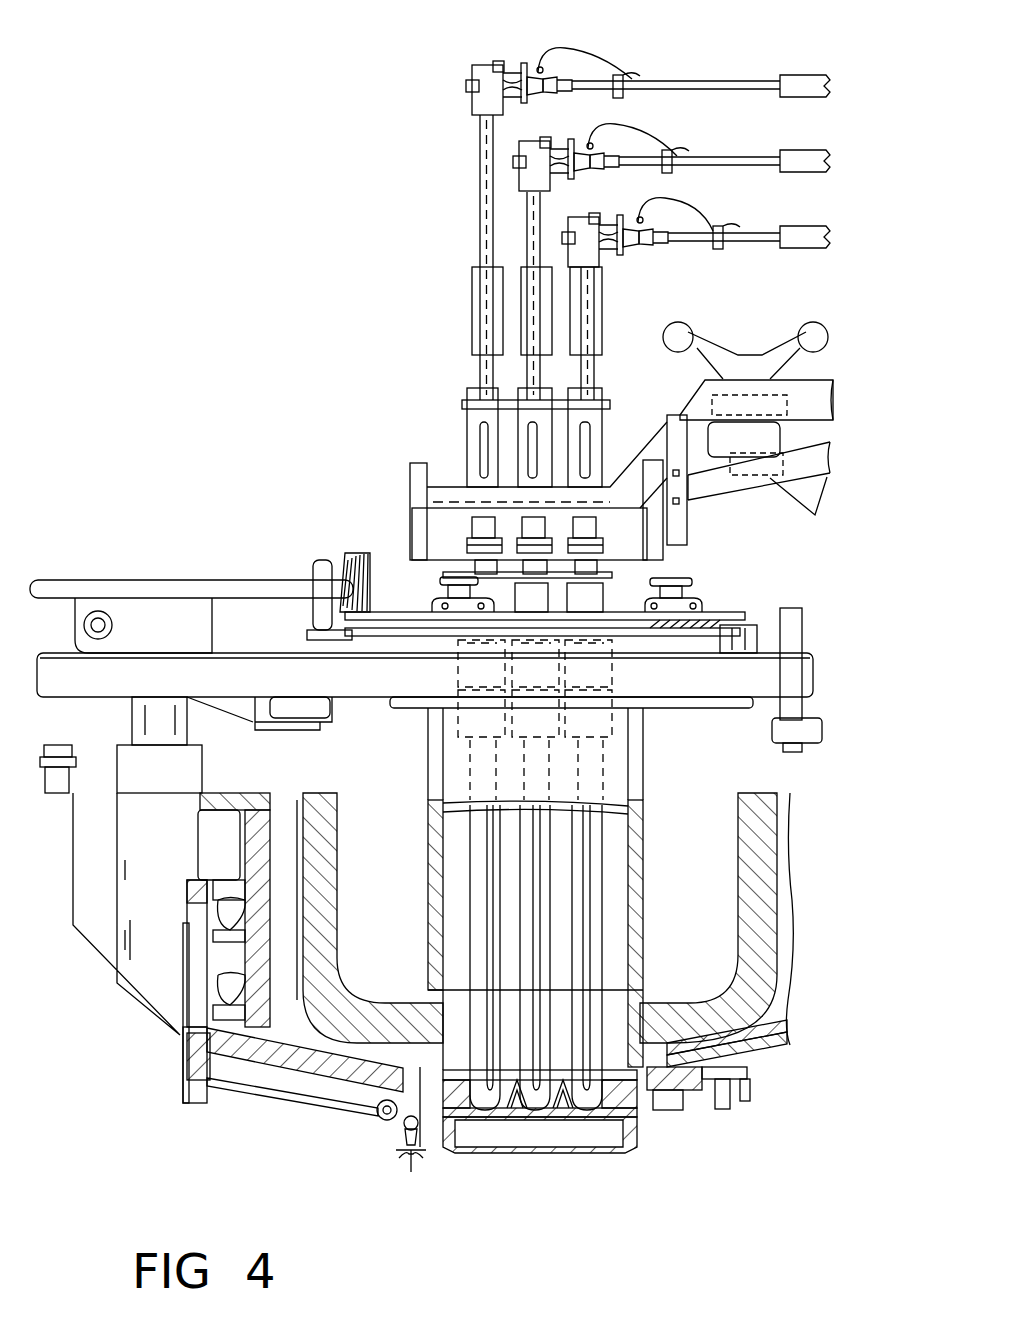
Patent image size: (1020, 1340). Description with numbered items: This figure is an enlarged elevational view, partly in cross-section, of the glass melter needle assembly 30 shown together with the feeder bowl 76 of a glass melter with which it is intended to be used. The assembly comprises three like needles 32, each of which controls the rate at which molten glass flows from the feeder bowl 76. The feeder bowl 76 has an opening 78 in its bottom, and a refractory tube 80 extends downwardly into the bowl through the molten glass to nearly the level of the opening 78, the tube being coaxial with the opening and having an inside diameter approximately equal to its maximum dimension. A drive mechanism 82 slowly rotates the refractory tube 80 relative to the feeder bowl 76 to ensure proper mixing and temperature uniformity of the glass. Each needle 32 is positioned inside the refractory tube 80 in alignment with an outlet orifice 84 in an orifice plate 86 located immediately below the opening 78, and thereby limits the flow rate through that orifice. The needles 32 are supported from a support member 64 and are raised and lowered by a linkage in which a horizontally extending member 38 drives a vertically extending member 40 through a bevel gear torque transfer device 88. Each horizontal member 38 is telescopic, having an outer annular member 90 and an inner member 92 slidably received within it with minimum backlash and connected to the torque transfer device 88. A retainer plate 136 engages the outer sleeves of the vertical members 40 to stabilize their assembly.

The glass melter needle assembly 30 is at (385, 470).
The needle 32 is at (480, 928).
The horizontally extending member 38 is at (735, 243).
The vertically extending member 40 is at (583, 372).
The support member 64 is at (742, 493).
The feeder bowl 76 is at (770, 850).
The opening 78 is at (683, 1103).
The refractory tube 80 is at (645, 855).
The drive mechanism 82 is at (250, 560).
The outlet orifice 84 is at (533, 1116).
The orifice plate 86 is at (583, 1157).
The bevel gear torque transfer device 88 is at (470, 80).
The outer annular member 90 is at (830, 238).
The inner member 92 is at (687, 235).
The retainer plate 136 is at (463, 404).